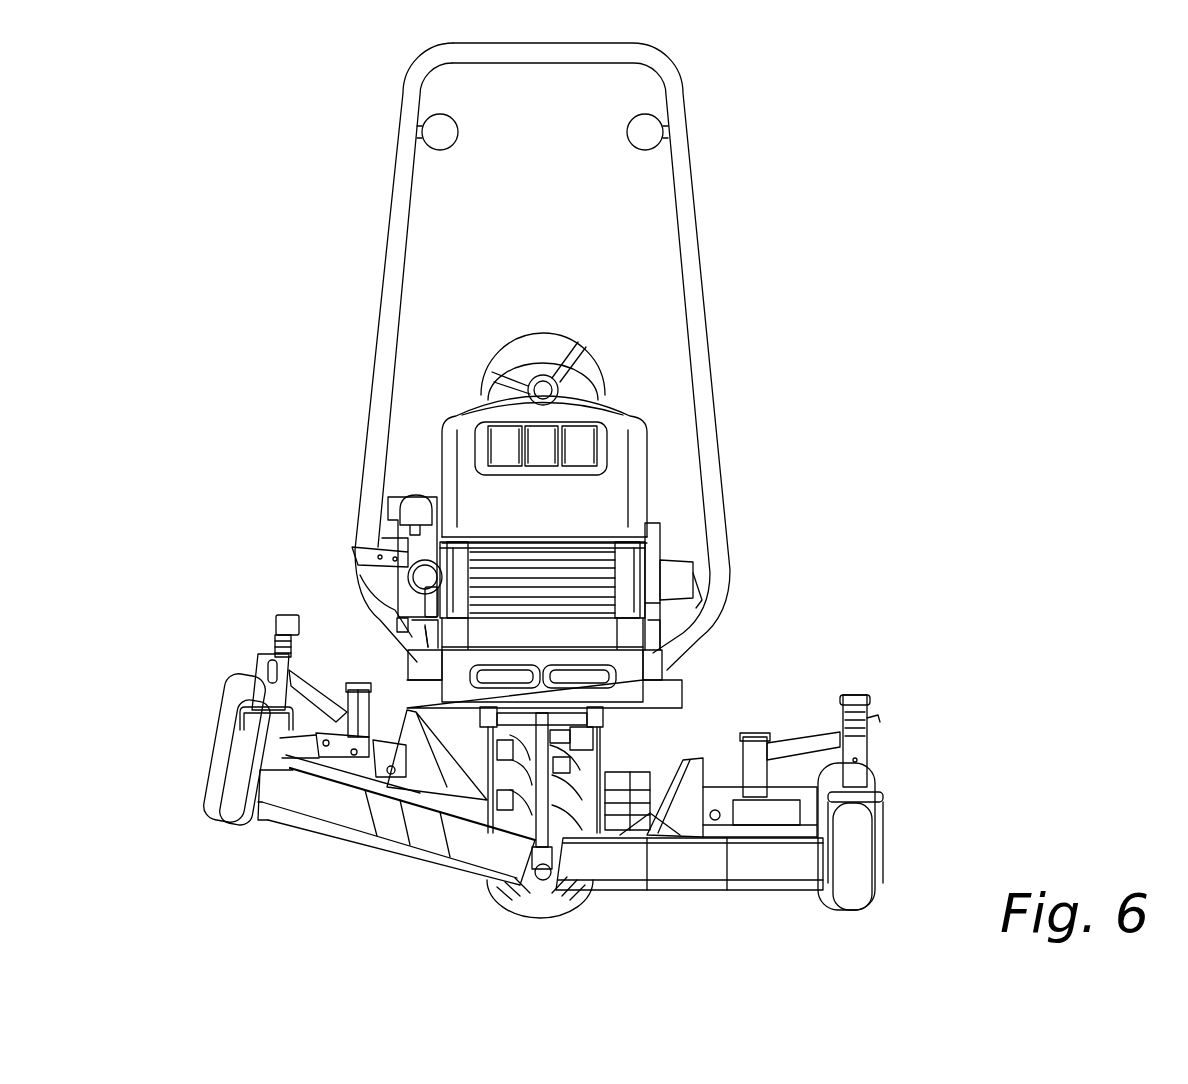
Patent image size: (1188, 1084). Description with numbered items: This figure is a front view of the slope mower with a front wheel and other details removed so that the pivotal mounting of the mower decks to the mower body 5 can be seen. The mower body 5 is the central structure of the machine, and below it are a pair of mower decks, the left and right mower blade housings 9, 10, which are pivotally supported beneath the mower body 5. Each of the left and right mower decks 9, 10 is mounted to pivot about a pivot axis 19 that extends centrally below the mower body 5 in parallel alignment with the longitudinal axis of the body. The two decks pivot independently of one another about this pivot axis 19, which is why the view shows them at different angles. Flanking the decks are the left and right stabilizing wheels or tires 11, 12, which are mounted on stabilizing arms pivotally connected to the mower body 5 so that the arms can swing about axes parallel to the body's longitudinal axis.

The mower body 5 is at (613, 495).
The left mower blade housing 9 is at (678, 887).
The right mower blade housing 10 is at (378, 838).
The left stabilizing wheel 11 is at (880, 773).
The right stabilizing wheel 12 is at (200, 797).
The pivot axis 19 is at (542, 880).